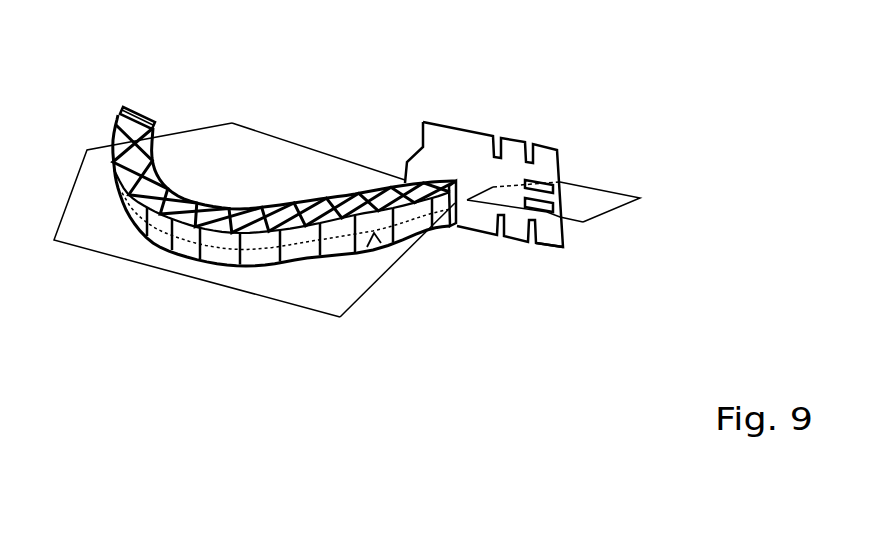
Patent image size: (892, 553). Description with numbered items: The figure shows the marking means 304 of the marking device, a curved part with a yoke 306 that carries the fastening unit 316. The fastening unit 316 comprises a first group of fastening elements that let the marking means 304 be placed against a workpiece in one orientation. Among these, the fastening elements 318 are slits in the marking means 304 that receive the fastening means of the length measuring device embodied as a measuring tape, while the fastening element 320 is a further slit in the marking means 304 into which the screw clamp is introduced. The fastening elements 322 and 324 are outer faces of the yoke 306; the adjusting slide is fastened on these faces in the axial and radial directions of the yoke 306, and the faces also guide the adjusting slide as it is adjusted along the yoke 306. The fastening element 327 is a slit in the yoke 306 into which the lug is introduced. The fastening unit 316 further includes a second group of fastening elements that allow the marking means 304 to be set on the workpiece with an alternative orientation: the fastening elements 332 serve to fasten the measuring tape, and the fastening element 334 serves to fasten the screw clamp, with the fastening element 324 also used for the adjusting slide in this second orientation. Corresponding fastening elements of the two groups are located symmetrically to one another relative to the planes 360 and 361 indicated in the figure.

The marking means 304 is at (390, 305).
The yoke 306 is at (173, 180).
The fastening unit 316 is at (537, 106).
The fastening elements 318 is at (558, 151).
The fastening element 320 is at (640, 195).
The fastening element 322 is at (310, 205).
The fastening element 324 is at (378, 243).
The fastening element 327 is at (135, 105).
The fastening elements 332 is at (545, 247).
The fastening element 334 is at (583, 222).
The plane 360 is at (612, 192).
The plane 361 is at (250, 185).